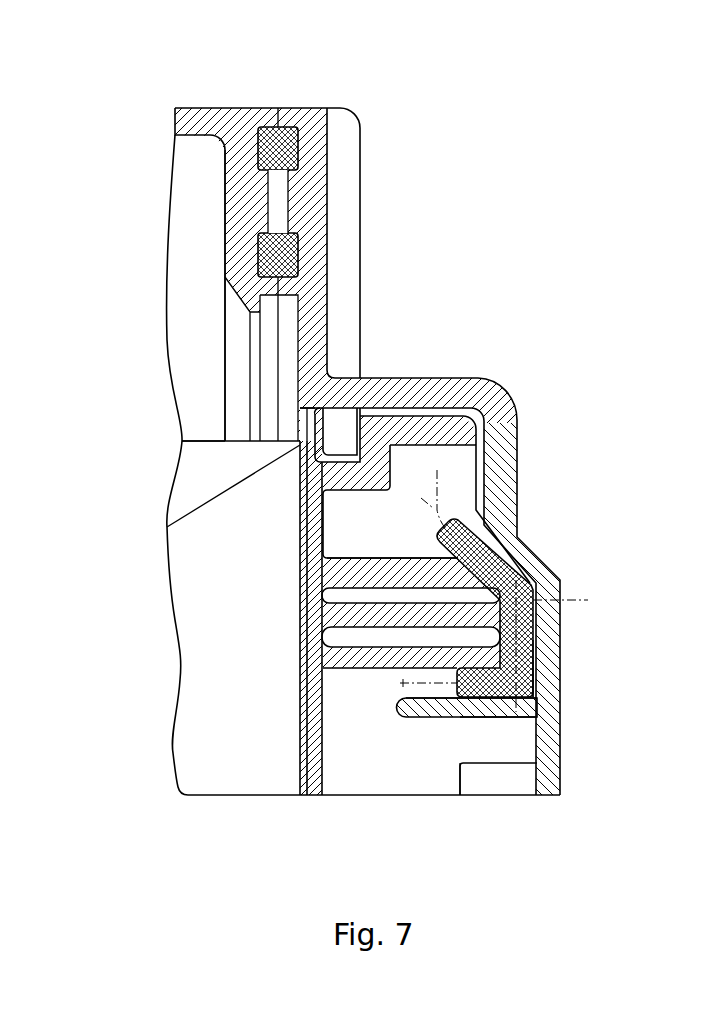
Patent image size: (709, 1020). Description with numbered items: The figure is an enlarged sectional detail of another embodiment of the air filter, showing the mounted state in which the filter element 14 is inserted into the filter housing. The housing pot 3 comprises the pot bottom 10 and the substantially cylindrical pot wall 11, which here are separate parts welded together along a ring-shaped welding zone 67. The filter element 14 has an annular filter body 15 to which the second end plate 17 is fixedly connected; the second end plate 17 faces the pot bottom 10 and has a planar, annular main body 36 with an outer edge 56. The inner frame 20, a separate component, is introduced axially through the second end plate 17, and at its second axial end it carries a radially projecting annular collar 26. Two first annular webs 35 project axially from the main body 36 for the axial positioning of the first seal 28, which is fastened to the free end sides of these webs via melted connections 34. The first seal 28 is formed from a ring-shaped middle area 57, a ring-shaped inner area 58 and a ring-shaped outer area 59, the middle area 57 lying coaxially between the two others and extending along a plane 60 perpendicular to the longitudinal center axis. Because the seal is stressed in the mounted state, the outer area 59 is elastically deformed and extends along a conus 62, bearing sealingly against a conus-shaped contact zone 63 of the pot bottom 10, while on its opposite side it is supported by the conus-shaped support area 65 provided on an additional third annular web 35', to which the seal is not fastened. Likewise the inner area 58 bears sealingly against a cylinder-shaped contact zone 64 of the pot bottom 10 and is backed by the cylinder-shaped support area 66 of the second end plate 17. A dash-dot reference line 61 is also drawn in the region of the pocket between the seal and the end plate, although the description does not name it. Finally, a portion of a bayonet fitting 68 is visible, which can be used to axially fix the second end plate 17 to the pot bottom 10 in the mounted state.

The housing pot 3 is at (408, 371).
The pot bottom 10 is at (528, 433).
The pot wall 11 is at (205, 122).
The filter element 14 is at (207, 428).
The filter body 15 is at (192, 484).
The second end plate 17 is at (332, 782).
The inner frame 20 is at (449, 786).
The annular collar 26 is at (515, 768).
The first seal 28 is at (550, 682).
The melted connection 34 is at (535, 645).
The first annular web 35 is at (366, 636).
The third annular web 35' is at (399, 491).
The main body 36 is at (310, 718).
The outer edge 56 is at (307, 420).
The middle area 57 is at (534, 662).
The inner area 58 is at (447, 693).
The outer area 59 is at (478, 513).
The plane 60 is at (575, 591).
The axis 61 is at (436, 489).
The conus 62 is at (397, 700).
The conus-shaped contact zone 63 is at (462, 578).
The cylinder-shaped contact zone 64 is at (437, 692).
The conus-shaped support area 65 is at (500, 547).
The cylinder-shaped support area 66 is at (490, 698).
The welding zone 67 is at (278, 193).
The bayonet fitting 68 is at (304, 462).